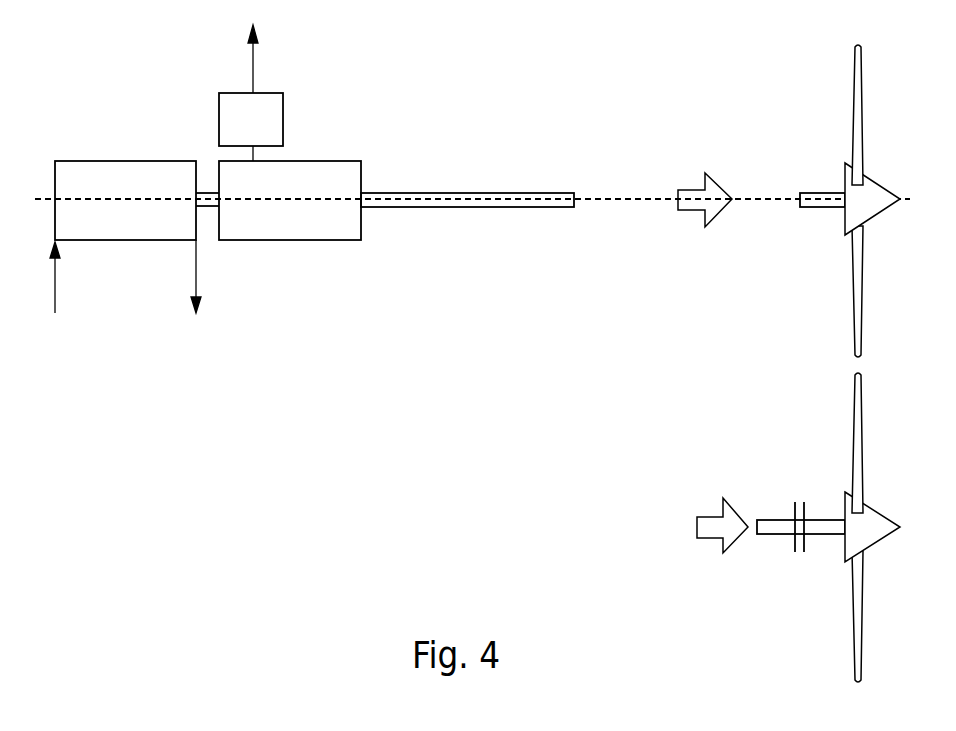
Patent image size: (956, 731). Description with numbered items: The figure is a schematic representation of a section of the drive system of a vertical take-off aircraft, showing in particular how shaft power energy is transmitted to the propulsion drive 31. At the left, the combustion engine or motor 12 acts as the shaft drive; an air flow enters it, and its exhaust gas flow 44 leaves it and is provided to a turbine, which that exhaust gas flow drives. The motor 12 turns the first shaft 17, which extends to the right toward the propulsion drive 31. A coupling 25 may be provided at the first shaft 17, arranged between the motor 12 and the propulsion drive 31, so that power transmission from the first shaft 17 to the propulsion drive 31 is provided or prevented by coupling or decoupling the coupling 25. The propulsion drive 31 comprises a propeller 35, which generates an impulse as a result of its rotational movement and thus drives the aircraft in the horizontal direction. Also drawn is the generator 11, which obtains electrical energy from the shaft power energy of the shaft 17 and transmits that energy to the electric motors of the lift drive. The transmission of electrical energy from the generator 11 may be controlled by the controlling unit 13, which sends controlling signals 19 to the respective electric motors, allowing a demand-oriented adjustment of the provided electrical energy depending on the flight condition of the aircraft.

The generator 11 is at (335, 232).
The motor 12 is at (107, 176).
The controlling unit 13 is at (275, 120).
The first shaft 17 is at (450, 193).
The controlling signals 19 is at (253, 62).
The coupling 25 is at (795, 567).
The propulsion drive 31 is at (789, 363).
The propeller 35 is at (856, 98).
The exhaust gas flow 44 is at (198, 265).